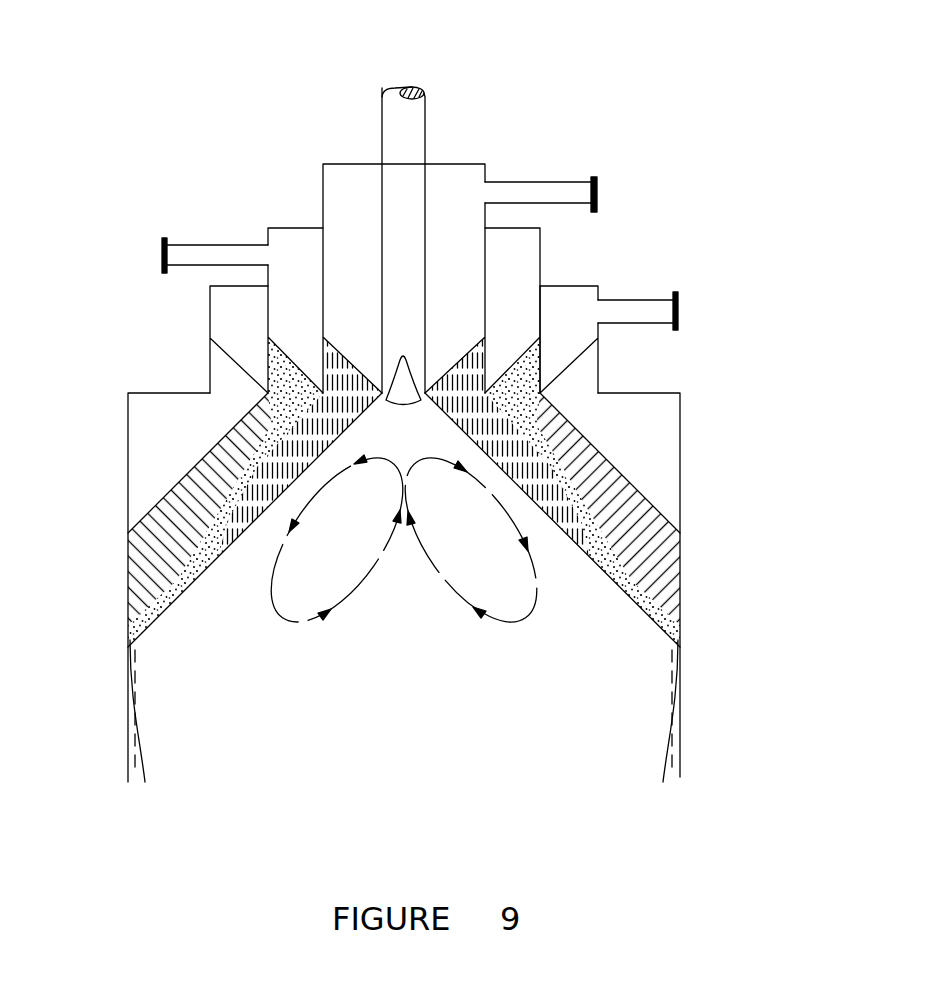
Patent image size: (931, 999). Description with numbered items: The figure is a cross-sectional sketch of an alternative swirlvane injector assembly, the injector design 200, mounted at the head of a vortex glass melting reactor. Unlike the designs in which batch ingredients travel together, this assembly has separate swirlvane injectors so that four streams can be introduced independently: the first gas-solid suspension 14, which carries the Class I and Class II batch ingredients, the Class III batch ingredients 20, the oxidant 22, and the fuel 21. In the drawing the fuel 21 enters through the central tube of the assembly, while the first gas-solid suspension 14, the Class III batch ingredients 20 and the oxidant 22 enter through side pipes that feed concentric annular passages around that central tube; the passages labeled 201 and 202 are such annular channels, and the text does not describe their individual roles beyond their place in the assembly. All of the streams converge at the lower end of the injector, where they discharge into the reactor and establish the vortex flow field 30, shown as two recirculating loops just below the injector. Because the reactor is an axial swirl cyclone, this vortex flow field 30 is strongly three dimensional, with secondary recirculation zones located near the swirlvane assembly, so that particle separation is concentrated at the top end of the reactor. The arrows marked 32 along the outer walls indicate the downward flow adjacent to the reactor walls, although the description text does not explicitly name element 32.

The first gas-solid suspension 14 is at (155, 257).
The Class III batch ingredients 20 is at (607, 192).
The fuel 21 is at (403, 78).
The oxidant 22 is at (688, 311).
The vortex flow field 30 is at (404, 539).
The wall flow along furnace walls 32 is at (153, 766).
The injector design 200 is at (404, 246).
The fuel channel 201 is at (404, 278).
The oxygen channel 202 is at (404, 310).